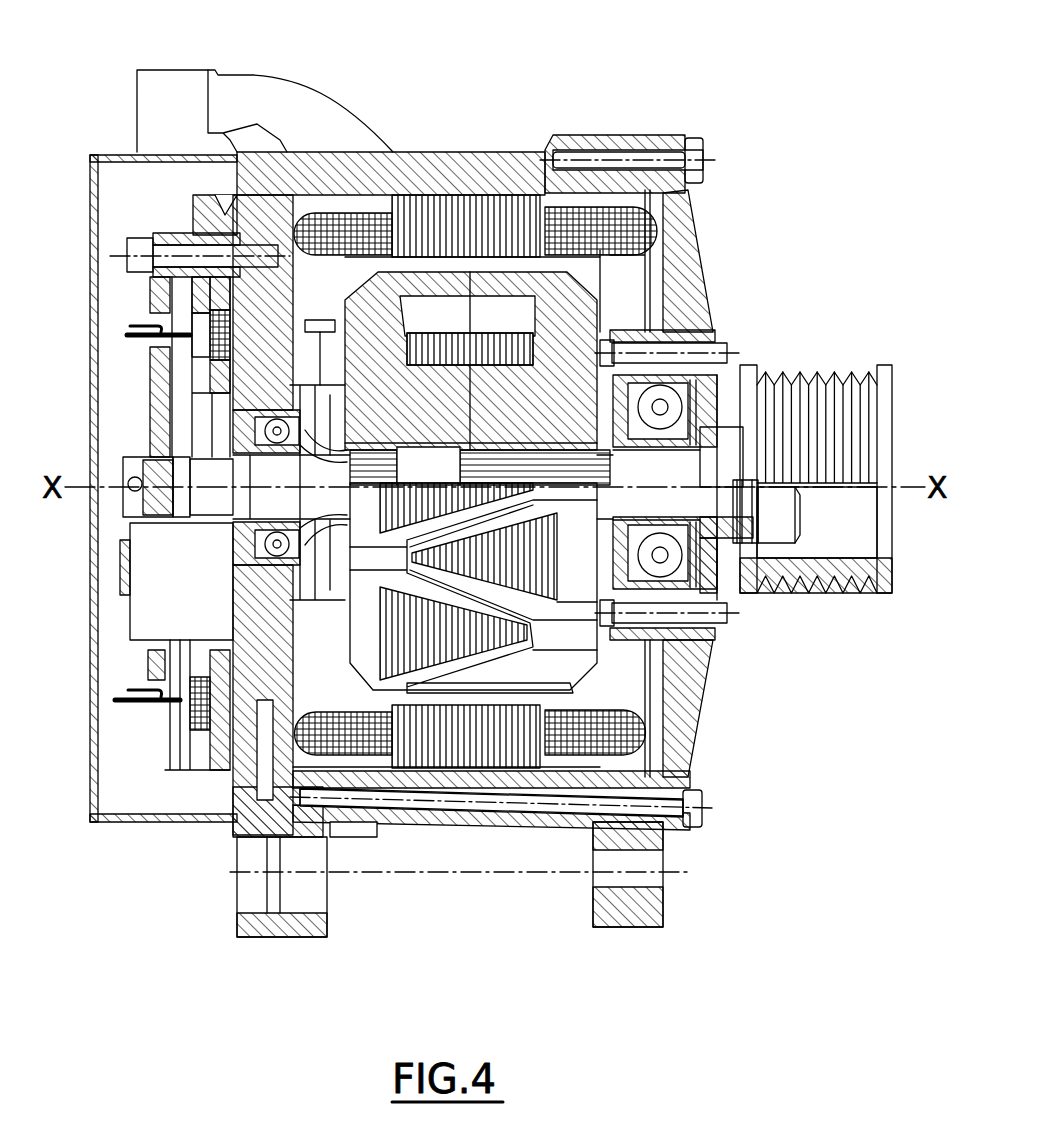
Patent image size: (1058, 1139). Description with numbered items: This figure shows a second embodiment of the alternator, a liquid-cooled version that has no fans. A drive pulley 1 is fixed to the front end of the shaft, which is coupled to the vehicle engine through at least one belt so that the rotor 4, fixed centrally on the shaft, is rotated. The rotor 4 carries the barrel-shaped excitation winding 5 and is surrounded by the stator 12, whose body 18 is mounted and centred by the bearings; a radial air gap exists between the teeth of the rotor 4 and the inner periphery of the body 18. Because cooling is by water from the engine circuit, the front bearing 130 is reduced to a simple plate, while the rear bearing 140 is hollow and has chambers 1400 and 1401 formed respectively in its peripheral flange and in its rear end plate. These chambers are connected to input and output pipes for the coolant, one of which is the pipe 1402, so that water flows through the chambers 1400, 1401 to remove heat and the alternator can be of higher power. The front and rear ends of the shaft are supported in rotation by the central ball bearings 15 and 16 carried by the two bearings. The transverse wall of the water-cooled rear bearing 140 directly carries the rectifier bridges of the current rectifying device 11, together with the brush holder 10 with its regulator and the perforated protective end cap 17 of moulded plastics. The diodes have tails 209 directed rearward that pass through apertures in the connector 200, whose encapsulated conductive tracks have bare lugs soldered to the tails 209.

The drive pulley 1 is at (835, 358).
The rotor 4 is at (600, 294).
The excitation winding 5 is at (477, 360).
The brush holder 10 is at (207, 594).
The current rectifying device 11 is at (166, 755).
The stator 12 is at (487, 265).
The front ball bearing 15 is at (722, 368).
The rear ball bearing 16 is at (293, 417).
The protective end cap 17 is at (177, 815).
The stator body 18 is at (524, 717).
The front bearing 130 is at (682, 282).
The rear bearing 140 is at (377, 827).
The connector 200 is at (168, 233).
The diode tails 209 is at (132, 708).
The chamber 1400 is at (440, 797).
The chamber 1401 is at (265, 790).
The pipe 1402 is at (137, 125).